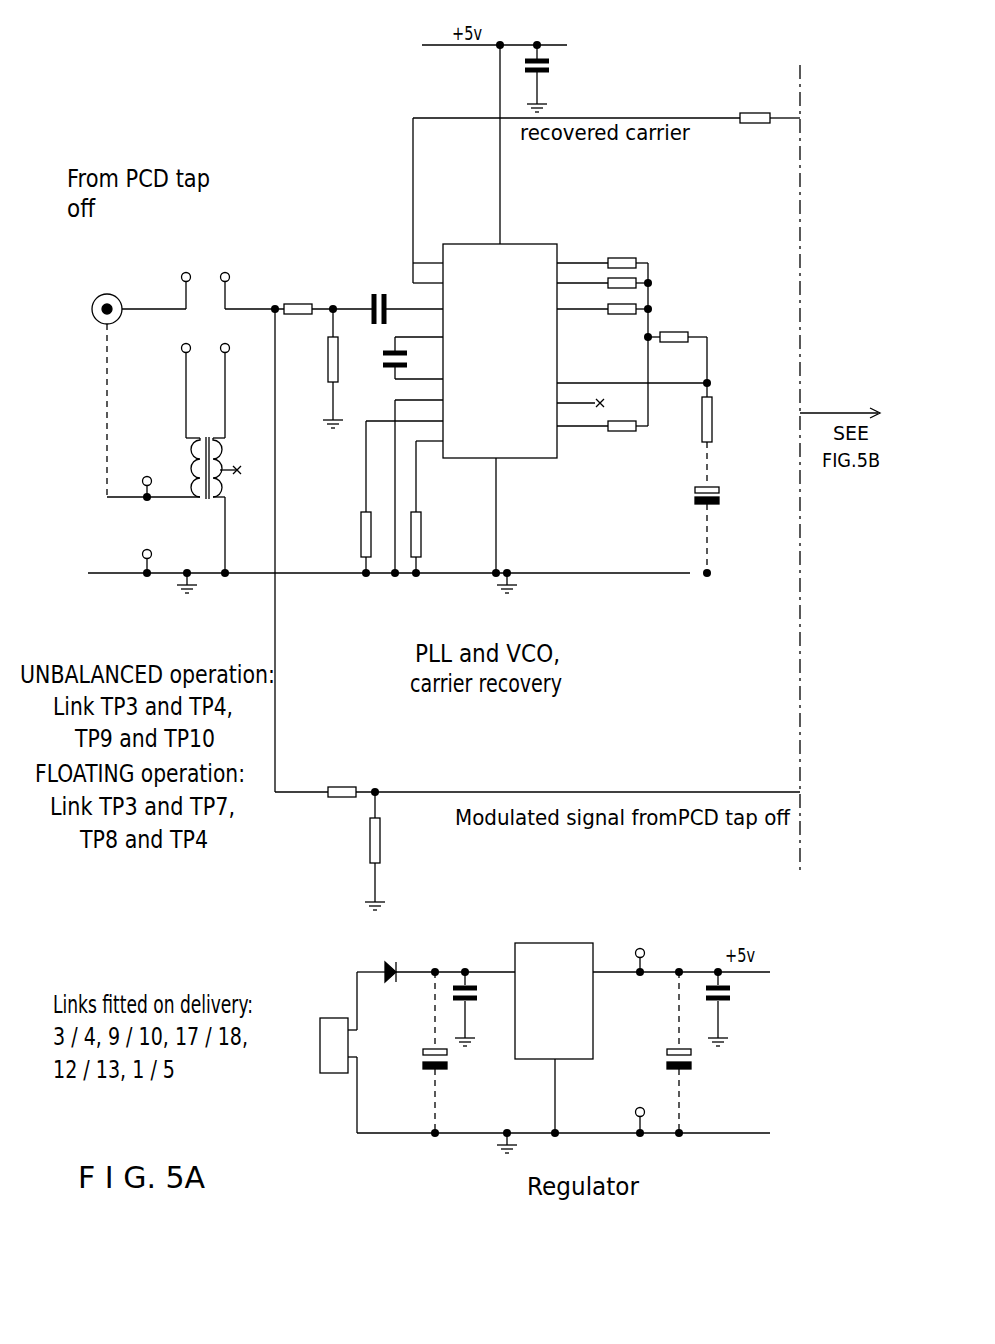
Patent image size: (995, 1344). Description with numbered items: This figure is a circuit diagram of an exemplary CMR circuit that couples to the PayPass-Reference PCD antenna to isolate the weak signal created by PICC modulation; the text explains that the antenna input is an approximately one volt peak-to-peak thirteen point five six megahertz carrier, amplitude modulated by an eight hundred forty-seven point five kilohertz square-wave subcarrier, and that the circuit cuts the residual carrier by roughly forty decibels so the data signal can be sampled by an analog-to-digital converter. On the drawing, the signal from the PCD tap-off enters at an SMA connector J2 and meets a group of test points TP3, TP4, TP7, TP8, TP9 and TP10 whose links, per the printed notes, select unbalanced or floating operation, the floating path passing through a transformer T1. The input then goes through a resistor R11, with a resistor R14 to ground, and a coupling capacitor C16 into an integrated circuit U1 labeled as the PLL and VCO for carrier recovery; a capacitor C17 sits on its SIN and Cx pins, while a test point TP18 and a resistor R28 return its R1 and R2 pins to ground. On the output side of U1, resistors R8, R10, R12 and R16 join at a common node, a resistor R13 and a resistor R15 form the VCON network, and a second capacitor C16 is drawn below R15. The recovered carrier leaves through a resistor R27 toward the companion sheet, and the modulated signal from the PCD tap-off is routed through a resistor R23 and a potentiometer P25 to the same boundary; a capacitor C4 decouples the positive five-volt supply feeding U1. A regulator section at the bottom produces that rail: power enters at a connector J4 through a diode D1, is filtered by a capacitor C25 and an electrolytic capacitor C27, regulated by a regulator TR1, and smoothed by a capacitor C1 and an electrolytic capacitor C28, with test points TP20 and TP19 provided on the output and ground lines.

The decoupling capacitor C4 is at (556, 76).
The recovered carrier output resistor R27 is at (755, 102).
The PLL and VCO integrated circuit U1 is at (536, 398).
The SMA connector J2 is at (140, 373).
The test point TP3 is at (183, 278).
The test point TP4 is at (245, 278).
The test point TP7 is at (183, 378).
The test point TP8 is at (224, 378).
The test point TP9 is at (142, 476).
The test point TP10 is at (144, 551).
The transformer T1 is at (211, 495).
The resistor R11 is at (327, 295).
The resistor R14 is at (320, 368).
The capacitor C16 is at (537, 424).
The capacitor C17 is at (376, 358).
The test point resistor TP18 is at (340, 499).
The resistor R28 is at (438, 509).
The resistor R8 is at (628, 328).
The resistor R10 is at (651, 284).
The resistor R12 is at (628, 320).
The resistor R13 is at (677, 364).
The resistor R15 is at (728, 419).
The resistor R16 is at (627, 438).
The resistor R23 is at (352, 774).
The potentiometer P25 is at (395, 851).
The power connector CON2 J4 is at (327, 1047).
The diode D1 is at (389, 956).
The capacitor C25 is at (468, 994).
The electrolytic capacitor C27 is at (417, 1052).
The voltage regulator TR1 is at (556, 1026).
The test point TP20 is at (640, 948).
The capacitor C1 is at (739, 1007).
The electrolytic capacitor C28 is at (661, 1052).
The test point TP19 is at (640, 1110).